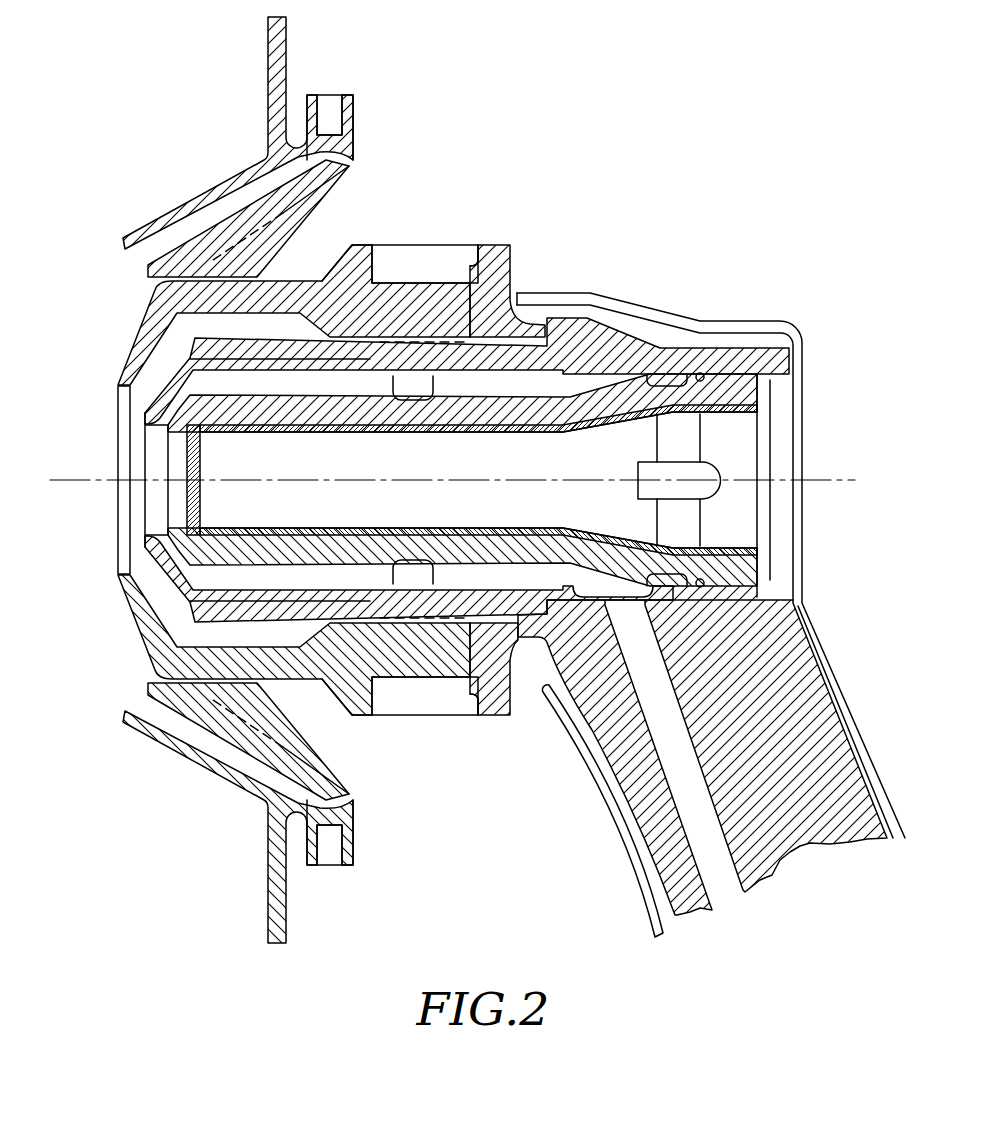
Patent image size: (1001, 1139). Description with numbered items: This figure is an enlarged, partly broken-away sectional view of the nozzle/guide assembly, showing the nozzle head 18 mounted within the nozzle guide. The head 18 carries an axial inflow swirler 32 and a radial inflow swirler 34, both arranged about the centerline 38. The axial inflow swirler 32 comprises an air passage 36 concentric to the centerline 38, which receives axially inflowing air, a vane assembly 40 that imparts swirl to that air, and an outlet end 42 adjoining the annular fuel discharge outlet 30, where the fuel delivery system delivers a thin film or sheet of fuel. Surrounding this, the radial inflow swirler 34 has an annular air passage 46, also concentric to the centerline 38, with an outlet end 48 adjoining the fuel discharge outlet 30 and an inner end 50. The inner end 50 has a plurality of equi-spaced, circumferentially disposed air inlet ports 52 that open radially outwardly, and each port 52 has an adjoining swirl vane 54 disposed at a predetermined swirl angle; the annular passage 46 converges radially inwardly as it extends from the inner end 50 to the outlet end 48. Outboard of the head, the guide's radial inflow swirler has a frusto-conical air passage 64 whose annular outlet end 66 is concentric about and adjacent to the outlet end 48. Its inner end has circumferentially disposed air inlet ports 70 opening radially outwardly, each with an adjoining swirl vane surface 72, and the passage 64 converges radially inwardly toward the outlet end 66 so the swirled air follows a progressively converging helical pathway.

The head 18 is at (515, 259).
The annular discharge outlet 30 is at (143, 440).
The axial inflow swirler 32 is at (768, 433).
The radial inflow swirler 34 is at (500, 232).
The air passage 36 is at (438, 470).
The centerline 38 is at (830, 480).
The vane assembly 40 is at (657, 517).
The outlet end 42 is at (145, 523).
The annular air passage 46 is at (347, 297).
The outlet end 48 is at (118, 396).
The inner end 50 is at (500, 713).
The air inlet ports 52 is at (457, 261).
The swirl vane 54 is at (408, 257).
The frusto-conical air passage 64 is at (187, 228).
The annular outlet end 66 is at (138, 259).
The air inlet ports 70 is at (340, 103).
The swirl vane surface 72 is at (333, 127).